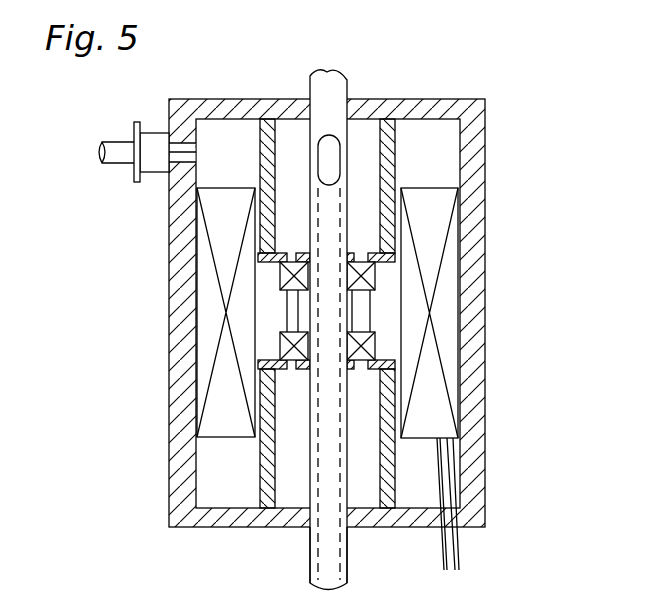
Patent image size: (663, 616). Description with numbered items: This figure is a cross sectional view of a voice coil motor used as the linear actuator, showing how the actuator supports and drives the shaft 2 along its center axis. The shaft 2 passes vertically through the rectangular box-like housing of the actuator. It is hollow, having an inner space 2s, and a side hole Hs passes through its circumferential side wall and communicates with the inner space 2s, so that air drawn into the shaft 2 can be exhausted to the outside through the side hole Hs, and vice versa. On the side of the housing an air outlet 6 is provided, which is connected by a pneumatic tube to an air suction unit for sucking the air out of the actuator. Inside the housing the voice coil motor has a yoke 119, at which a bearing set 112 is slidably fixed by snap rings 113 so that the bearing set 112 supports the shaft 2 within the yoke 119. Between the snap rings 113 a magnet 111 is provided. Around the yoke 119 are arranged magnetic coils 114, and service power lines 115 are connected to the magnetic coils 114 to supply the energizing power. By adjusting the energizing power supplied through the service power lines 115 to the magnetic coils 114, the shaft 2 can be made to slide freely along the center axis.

The shaft 2 is at (348, 82).
The inner space 2s is at (348, 565).
The side hole Hs is at (325, 150).
The air outlet 6 is at (115, 163).
The magnet 111 is at (385, 277).
The bearing set 112 is at (377, 347).
The snap rings 113 is at (351, 368).
The magnetic coils 114 is at (445, 213).
The service power lines 115 is at (463, 548).
The yoke 119 is at (392, 152).